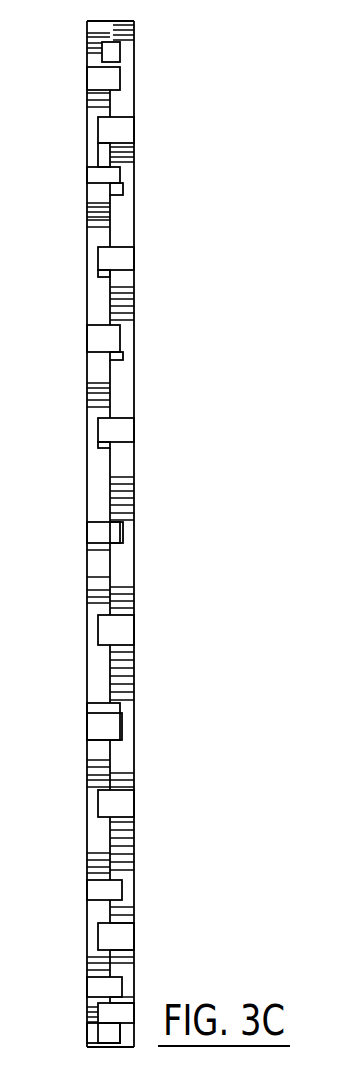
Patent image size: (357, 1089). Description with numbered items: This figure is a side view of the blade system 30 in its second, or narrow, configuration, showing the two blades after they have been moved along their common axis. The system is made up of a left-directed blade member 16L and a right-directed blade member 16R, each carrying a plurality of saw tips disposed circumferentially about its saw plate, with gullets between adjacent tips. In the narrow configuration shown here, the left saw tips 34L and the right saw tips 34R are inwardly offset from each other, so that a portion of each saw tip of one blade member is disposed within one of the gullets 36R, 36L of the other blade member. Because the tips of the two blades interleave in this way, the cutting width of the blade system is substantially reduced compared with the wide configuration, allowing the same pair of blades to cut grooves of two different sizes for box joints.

The blade system 30 is at (266, 27).
The left-directed blade member 16L is at (133, 372).
The right-directed blade member 16R is at (87, 306).
The saw tips 34L is at (127, 135).
The saw tips 34R is at (90, 83).
The gullets 36L is at (141, 148).
The gullets 36R is at (79, 183).